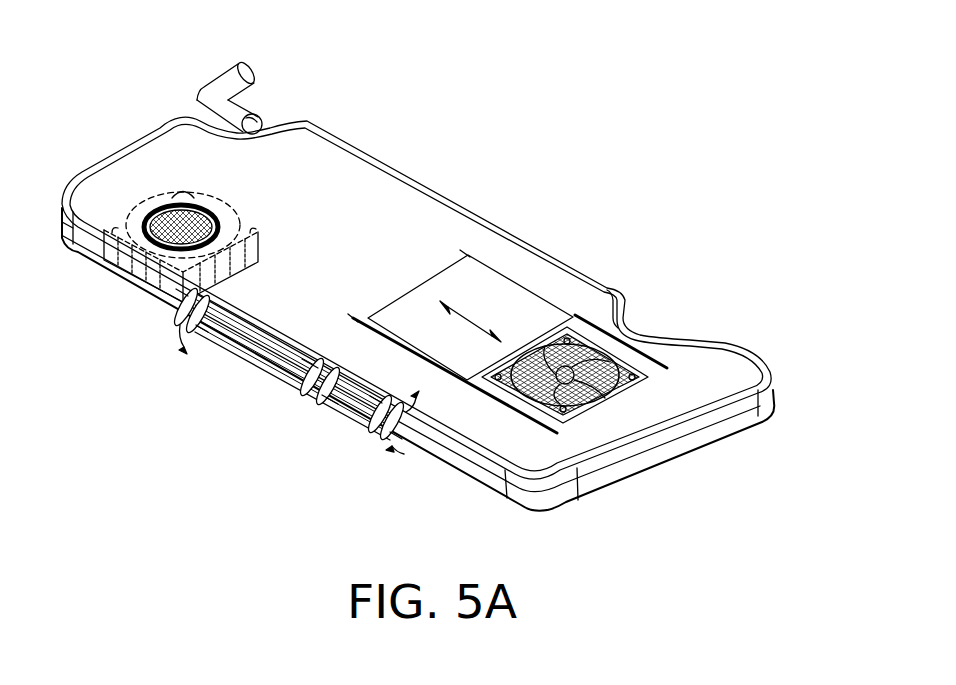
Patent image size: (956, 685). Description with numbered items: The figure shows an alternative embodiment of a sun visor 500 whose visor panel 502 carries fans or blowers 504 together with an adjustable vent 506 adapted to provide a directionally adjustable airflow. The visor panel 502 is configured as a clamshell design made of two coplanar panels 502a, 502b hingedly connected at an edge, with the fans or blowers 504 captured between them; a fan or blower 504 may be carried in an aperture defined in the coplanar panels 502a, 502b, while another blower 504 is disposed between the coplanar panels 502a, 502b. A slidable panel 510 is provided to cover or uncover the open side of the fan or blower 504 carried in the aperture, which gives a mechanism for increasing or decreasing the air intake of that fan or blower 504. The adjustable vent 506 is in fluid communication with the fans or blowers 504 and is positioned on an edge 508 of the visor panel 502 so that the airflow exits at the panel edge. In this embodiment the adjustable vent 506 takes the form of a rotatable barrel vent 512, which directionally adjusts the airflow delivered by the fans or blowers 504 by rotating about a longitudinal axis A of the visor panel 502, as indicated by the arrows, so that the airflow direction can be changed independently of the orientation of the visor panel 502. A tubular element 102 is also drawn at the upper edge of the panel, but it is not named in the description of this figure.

The nozzle 102 is at (224, 80).
The sun visor 500 is at (563, 163).
The visor panel 502 is at (426, 341).
The coplanar panel 502a is at (708, 452).
The coplanar panel 502b is at (680, 463).
The fan or blower 504 is at (152, 188).
The adjustable vent 506 is at (246, 378).
The edge 508 is at (488, 470).
The slidable panel 510 is at (500, 290).
The rotatable barrel vent 512 is at (310, 378).
The longitudinal axis A is at (560, 492).